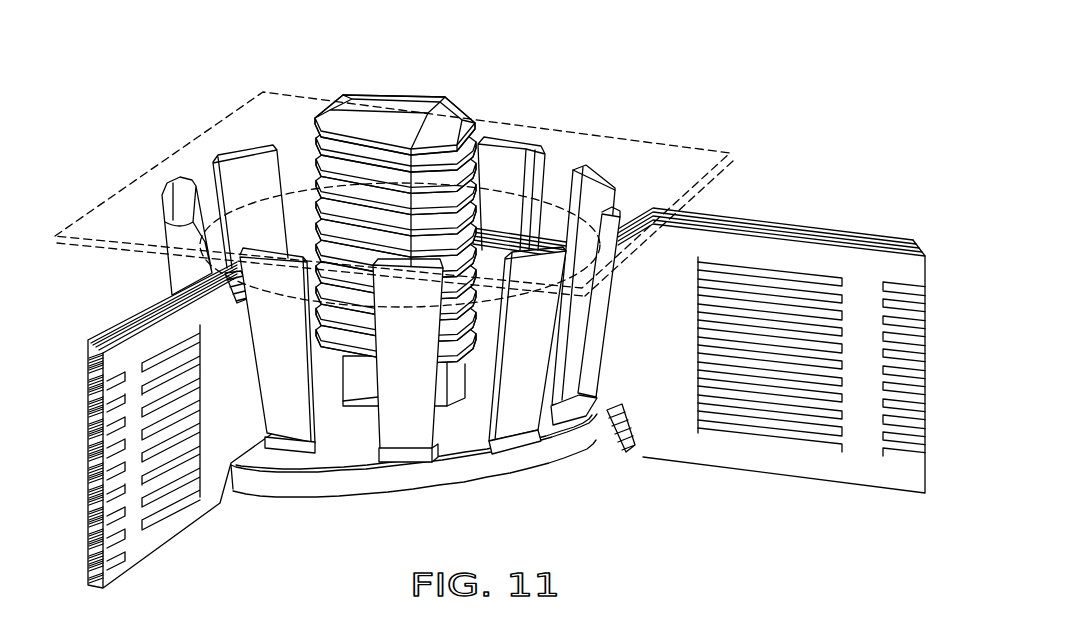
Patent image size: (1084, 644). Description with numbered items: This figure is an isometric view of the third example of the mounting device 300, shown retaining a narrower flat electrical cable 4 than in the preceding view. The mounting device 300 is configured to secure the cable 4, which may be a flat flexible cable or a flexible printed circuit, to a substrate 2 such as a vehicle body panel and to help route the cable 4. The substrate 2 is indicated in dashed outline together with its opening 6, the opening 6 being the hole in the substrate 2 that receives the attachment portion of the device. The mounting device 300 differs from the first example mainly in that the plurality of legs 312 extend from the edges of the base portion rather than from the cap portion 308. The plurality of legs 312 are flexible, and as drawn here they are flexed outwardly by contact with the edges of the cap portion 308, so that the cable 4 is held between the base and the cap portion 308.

The mounting device 300 is at (327, 83).
The substrate 2 is at (627, 155).
The cable 4 is at (843, 235).
The opening 6 is at (262, 184).
The cap portion 308 is at (338, 247).
The plurality of legs 312 is at (643, 547).